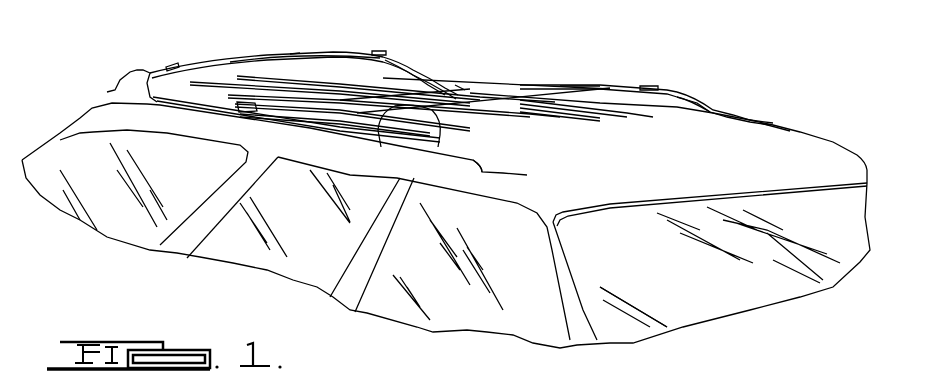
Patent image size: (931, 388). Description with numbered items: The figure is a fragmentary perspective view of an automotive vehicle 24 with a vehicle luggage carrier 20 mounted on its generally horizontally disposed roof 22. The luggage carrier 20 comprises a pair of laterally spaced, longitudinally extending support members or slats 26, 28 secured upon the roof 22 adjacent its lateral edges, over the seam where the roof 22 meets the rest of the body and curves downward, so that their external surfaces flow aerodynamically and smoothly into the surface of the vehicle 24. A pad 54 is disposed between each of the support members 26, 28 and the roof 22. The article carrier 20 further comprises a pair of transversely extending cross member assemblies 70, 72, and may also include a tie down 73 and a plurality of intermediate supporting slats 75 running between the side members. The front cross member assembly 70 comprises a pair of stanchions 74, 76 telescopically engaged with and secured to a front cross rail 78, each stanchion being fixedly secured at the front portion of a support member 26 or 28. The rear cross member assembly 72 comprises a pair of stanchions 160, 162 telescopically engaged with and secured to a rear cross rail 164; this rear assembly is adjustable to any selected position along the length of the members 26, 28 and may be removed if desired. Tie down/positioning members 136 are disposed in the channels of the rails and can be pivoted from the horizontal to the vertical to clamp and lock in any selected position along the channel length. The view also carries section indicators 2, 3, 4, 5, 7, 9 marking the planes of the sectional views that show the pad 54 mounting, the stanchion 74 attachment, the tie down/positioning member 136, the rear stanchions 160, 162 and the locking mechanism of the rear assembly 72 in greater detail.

The vehicle luggage carrier 20 is at (535, 70).
The roof 22 is at (634, 183).
The automotive vehicle 24 is at (503, 318).
The support member 26 is at (480, 161).
The support member 28 is at (757, 118).
The pad 54 is at (527, 175).
The front cross member assembly 70 is at (613, 82).
The rear cross member assembly 72 is at (315, 38).
The tie down 73 is at (236, 108).
The stanchion 74 is at (388, 128).
The intermediate supporting slat 75 is at (457, 126).
The stanchion 76 is at (713, 103).
The front cross rail 78 is at (588, 80).
The tie down/positioning member 136 is at (173, 64).
The stanchion 160 is at (123, 82).
The stanchion 162 is at (430, 66).
The rear cross rail 164 is at (350, 50).
The section line FIG. 2 is at (229, 130).
The section line FIG. 3 is at (318, 136).
The section line FIG. 4 is at (418, 118).
The section line FIG. 5 is at (402, 2).
The section line FIG. 7 is at (683, 40).
The section line FIG. 9 is at (150, 56).